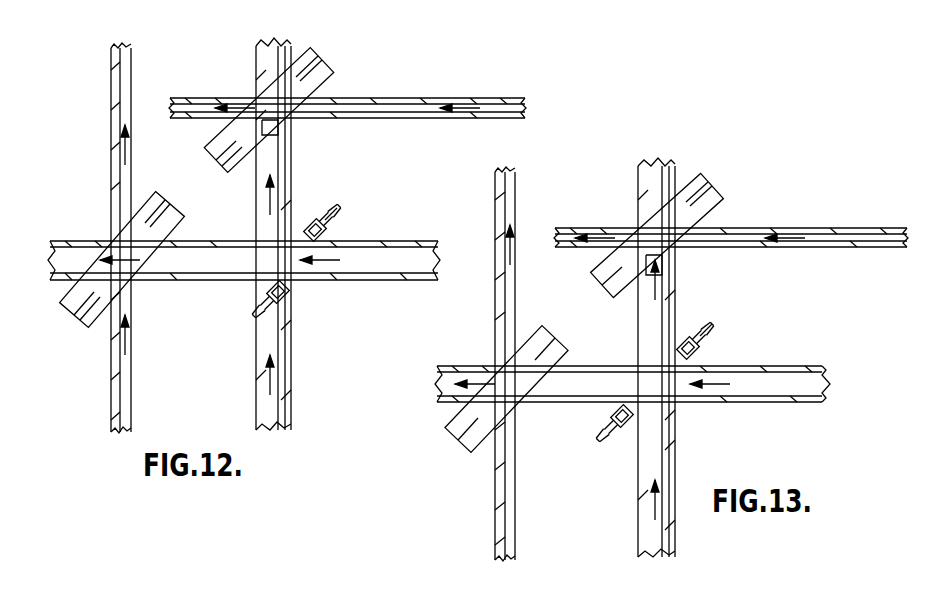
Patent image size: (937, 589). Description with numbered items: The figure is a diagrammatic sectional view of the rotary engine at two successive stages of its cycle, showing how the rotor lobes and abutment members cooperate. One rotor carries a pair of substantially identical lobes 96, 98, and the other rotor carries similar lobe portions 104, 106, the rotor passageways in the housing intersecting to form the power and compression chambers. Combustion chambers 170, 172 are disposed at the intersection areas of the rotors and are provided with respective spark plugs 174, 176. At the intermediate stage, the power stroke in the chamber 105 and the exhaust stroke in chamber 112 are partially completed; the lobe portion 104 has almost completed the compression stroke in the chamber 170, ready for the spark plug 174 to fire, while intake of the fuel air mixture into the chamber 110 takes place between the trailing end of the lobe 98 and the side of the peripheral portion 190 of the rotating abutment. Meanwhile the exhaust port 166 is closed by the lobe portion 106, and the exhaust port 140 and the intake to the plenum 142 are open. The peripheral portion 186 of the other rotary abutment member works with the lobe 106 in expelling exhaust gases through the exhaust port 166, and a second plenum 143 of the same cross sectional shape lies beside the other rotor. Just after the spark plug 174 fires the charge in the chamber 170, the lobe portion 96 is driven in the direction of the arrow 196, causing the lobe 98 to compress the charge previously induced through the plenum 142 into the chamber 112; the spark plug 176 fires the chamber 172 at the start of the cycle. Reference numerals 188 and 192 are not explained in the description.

In FIG. 12, the lobe 96 is at (257, 187).
In FIG. 13, the lobe 96 is at (660, 320).
In FIG. 12, the lobe 98 is at (285, 50).
In FIG. 13, the lobe 98 is at (668, 530).
In FIG. 12, the lobe portion 104 is at (372, 273).
In FIG. 13, the lobe portion 104 is at (718, 403).
In FIG. 12, the chamber 105 is at (240, 256).
In FIG. 12, the lobe portion 106 is at (110, 240).
In FIG. 13, the lobe portion 106 is at (480, 369).
In FIG. 12, the rotor recess chamber 110 is at (250, 100).
In FIG. 12, the chamber 112 is at (385, 106).
In FIG. 13, the chamber 112 is at (676, 438).
In FIG. 12, the exhaust port 140 is at (208, 150).
In FIG. 12, the intake cavity 142 is at (320, 68).
In FIG. 13, the intake cavity 142 is at (700, 194).
In FIG. 12, the cavity 143 is at (78, 300).
In FIG. 13, the cavity 143 is at (466, 440).
In FIG. 12, the exhaust port 166 is at (170, 210).
In FIG. 12, the combustion chamber 170 is at (325, 232).
In FIG. 13, the combustion chamber 170 is at (705, 335).
In FIG. 13, the combustion chamber 172 is at (628, 428).
In FIG. 12, the spark plug 174 is at (320, 212).
In FIG. 13, the spark plug 174 is at (715, 328).
In FIG. 12, the spark plug 176 is at (255, 315).
In FIG. 12, the peripheral portion 186 is at (118, 160).
In FIG. 13, the peripheral portion 186 is at (511, 220).
In FIG. 12, the vertical conduit 188 is at (133, 386).
In FIG. 13, the vertical conduit 188 is at (517, 470).
In FIG. 12, the peripheral portion 190 is at (268, 148).
In FIG. 13, the peripheral portion 190 is at (618, 232).
In FIG. 12, the horizontal conduit 192 is at (490, 98).
In FIG. 13, the horizontal conduit 192 is at (848, 230).
In FIG. 13, the arrow 196 is at (640, 325).